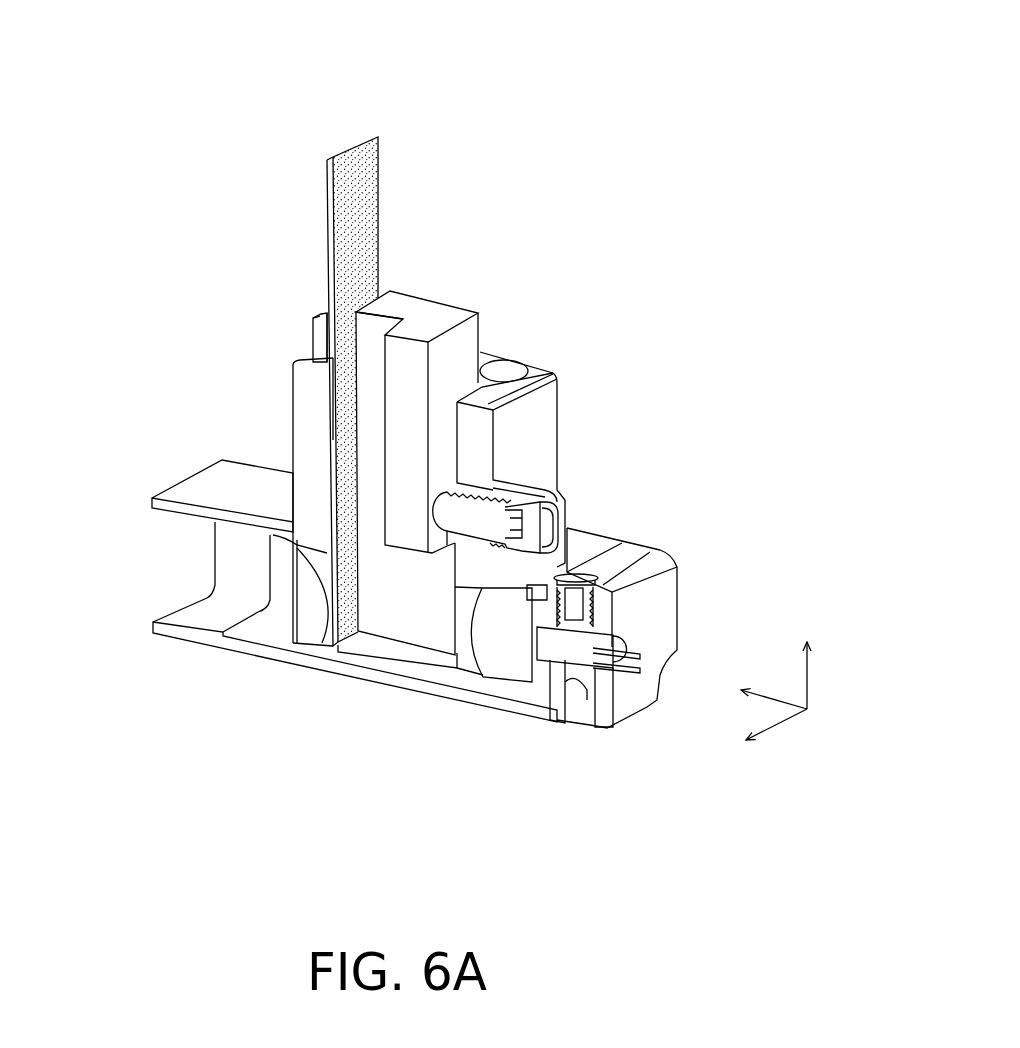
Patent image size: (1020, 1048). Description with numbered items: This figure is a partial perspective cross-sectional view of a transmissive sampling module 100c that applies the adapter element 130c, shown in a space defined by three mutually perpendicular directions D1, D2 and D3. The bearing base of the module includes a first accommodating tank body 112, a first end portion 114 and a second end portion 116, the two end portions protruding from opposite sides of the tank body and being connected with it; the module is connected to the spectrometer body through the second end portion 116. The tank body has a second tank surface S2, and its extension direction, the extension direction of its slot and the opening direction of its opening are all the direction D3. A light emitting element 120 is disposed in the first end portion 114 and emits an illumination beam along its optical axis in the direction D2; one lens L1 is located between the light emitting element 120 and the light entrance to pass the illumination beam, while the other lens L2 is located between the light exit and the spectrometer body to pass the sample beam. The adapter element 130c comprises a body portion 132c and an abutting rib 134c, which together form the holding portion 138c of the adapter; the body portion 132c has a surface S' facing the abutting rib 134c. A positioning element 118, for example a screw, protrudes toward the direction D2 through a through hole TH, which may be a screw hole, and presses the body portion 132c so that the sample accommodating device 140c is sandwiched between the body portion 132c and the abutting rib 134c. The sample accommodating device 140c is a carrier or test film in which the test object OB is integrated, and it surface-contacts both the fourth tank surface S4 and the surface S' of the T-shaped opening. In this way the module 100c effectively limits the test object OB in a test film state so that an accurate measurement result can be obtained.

The transmissive sampling module 100c is at (748, 855).
The first accommodating tank body 112 is at (533, 368).
The first end portion 114 is at (637, 554).
The second end portion 116 is at (203, 483).
The positioning element 118 is at (490, 517).
The light emitting element 120 is at (580, 650).
The adapter element 130c is at (118, 5).
The body portion 132c is at (432, 320).
The abutting rib 134c is at (313, 323).
The holding portion 138c is at (403, 451).
The sample accommodating device 140c is at (368, 170).
The test object OB is at (362, 216).
The surface S' is at (392, 285).
The second tank surface S2 is at (331, 440).
The fourth tank surface S4 is at (324, 338).
The through hole TH is at (540, 522).
The lens L1 is at (517, 660).
The lens L2 is at (315, 625).
The direction D1 is at (762, 735).
The direction D2 is at (756, 696).
The direction D3 is at (812, 656).